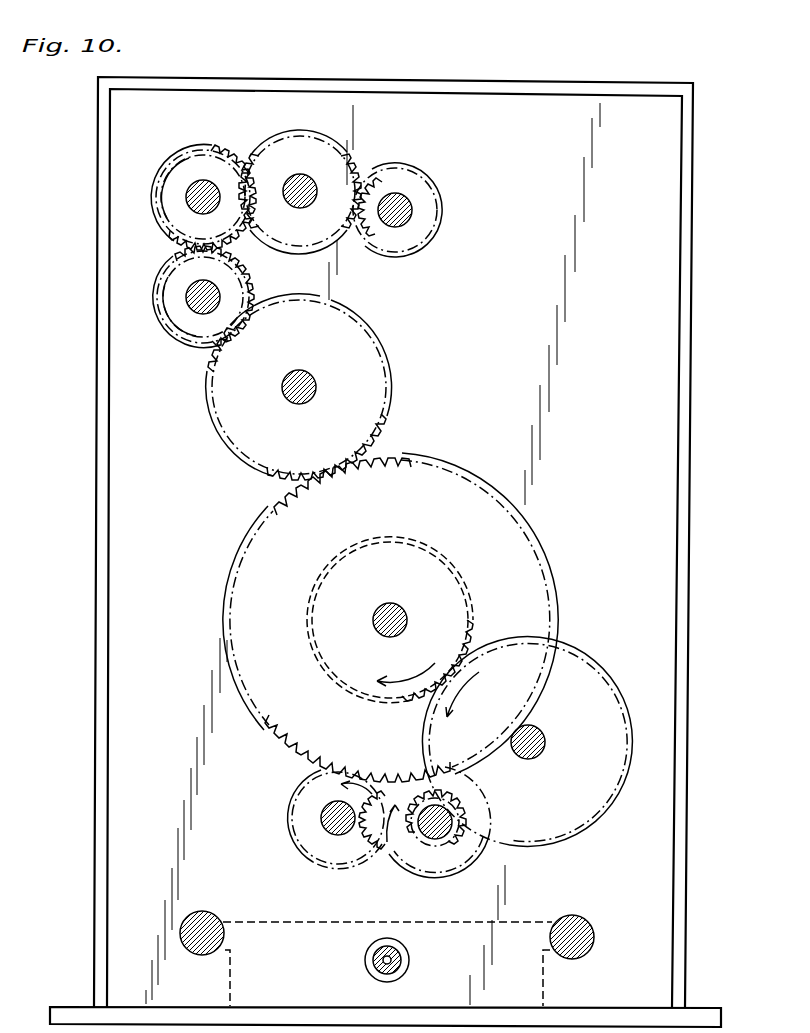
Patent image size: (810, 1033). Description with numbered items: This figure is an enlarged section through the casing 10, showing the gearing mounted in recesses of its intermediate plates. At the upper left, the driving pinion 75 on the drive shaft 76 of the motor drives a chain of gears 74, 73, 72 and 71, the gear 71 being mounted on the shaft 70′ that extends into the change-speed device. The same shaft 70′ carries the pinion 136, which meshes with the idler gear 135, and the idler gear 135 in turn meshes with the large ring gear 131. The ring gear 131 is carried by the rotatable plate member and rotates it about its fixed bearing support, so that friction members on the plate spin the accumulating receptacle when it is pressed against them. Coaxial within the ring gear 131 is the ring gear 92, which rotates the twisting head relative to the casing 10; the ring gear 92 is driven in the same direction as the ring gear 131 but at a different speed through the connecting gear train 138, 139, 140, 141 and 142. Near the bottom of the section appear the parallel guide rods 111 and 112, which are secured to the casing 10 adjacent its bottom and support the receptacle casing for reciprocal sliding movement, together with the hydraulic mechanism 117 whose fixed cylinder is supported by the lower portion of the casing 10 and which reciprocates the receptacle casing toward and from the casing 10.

The casing 10 is at (683, 452).
The gear 73 is at (172, 176).
The gear 72 is at (165, 226).
The gear 74 is at (256, 147).
The driving pinion 75 is at (443, 226).
The drive shaft 76 is at (397, 205).
The gear 71 is at (167, 324).
The shaft 70′ is at (200, 297).
The pinion 136 is at (193, 337).
The idler gear 135 is at (257, 467).
The ring gear 131 is at (533, 543).
The ring gear 92 is at (442, 557).
The connecting gear 138 is at (605, 670).
The connecting gear 142 is at (300, 797).
The connecting gear 141 is at (372, 847).
The connecting gear 139 is at (440, 848).
The connecting gear 140 is at (488, 860).
The guide rod 111 is at (207, 912).
The guide rod 112 is at (572, 918).
The hydraulic mechanism 117 is at (410, 963).